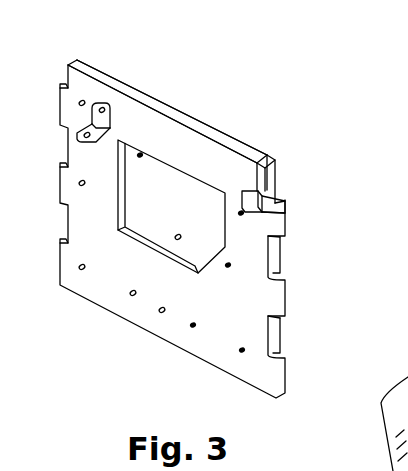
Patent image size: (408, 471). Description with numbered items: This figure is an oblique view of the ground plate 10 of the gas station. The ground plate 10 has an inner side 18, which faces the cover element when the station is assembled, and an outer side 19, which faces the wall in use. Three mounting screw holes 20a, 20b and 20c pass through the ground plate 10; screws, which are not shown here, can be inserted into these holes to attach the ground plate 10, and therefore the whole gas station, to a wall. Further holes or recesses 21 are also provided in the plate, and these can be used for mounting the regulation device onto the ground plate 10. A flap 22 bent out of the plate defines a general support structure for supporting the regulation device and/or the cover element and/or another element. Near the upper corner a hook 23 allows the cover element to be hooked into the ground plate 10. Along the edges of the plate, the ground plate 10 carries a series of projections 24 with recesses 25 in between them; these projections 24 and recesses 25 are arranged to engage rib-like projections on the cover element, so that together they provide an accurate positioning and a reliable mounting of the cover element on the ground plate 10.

The ground plate 10 is at (290, 166).
The inner side 18 is at (171, 206).
The outer side 19 is at (240, 140).
The mounting screw hole 20a is at (86, 102).
The mounting screw hole 20b is at (259, 172).
The mounting screw hole 20c is at (157, 313).
The holes or recesses 21 is at (80, 271).
The flap 22 is at (110, 126).
The hook 23 is at (284, 202).
The projections 24 is at (63, 108).
The recesses 25 is at (68, 147).